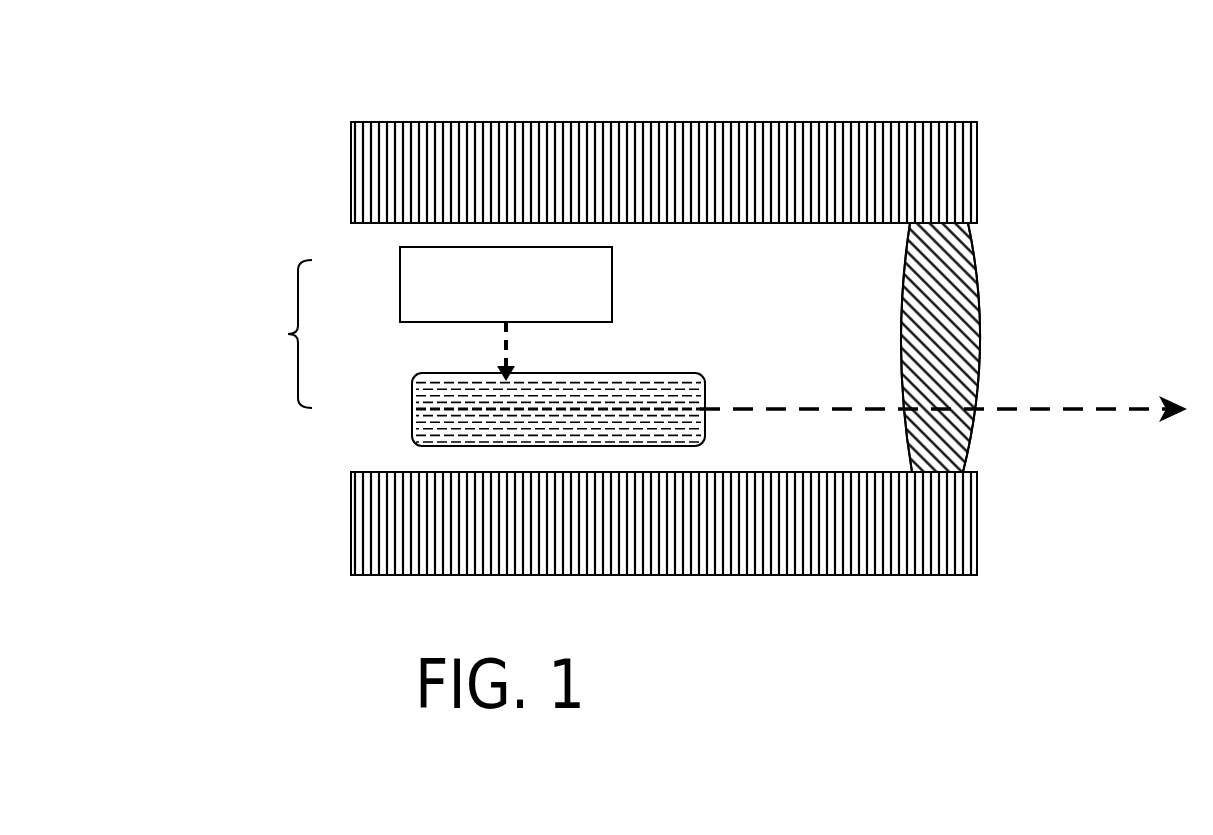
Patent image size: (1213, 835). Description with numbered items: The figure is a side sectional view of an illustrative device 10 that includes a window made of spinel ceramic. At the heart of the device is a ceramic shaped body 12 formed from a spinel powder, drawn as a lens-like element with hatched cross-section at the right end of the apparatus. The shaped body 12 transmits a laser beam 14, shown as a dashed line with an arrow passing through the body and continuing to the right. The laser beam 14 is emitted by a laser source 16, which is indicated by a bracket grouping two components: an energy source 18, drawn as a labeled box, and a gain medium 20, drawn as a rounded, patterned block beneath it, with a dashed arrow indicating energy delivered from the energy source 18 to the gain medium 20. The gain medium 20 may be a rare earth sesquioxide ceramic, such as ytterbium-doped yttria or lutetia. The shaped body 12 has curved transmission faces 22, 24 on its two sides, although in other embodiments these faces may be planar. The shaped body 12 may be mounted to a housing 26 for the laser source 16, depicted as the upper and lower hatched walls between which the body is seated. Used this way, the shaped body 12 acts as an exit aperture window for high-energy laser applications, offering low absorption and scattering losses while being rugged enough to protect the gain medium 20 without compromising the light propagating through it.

The device 10 is at (558, 83).
The ceramic shaped body 12 is at (975, 248).
The laser beam 14 is at (815, 407).
The laser source 16 is at (289, 334).
The energy source 18 is at (395, 310).
The gain medium 20 is at (417, 410).
The curved transmission face 22 is at (902, 305).
The curved transmission face 24 is at (978, 385).
The housing 26 is at (813, 138).